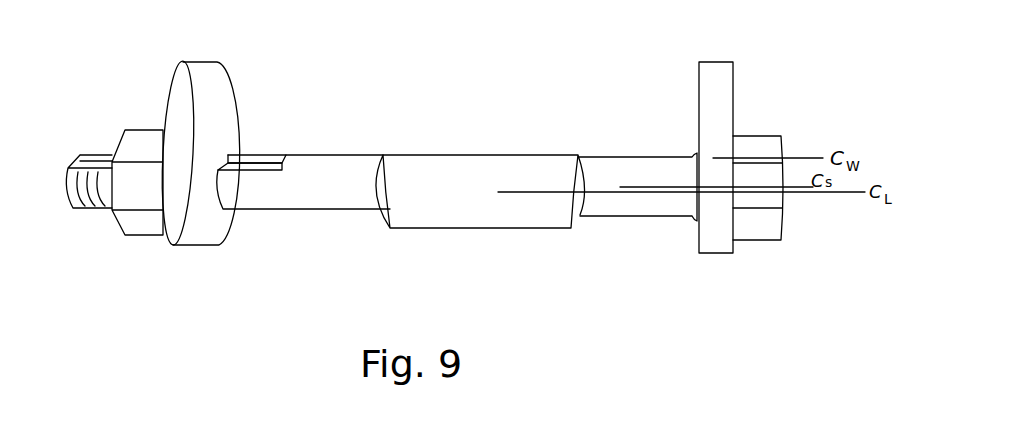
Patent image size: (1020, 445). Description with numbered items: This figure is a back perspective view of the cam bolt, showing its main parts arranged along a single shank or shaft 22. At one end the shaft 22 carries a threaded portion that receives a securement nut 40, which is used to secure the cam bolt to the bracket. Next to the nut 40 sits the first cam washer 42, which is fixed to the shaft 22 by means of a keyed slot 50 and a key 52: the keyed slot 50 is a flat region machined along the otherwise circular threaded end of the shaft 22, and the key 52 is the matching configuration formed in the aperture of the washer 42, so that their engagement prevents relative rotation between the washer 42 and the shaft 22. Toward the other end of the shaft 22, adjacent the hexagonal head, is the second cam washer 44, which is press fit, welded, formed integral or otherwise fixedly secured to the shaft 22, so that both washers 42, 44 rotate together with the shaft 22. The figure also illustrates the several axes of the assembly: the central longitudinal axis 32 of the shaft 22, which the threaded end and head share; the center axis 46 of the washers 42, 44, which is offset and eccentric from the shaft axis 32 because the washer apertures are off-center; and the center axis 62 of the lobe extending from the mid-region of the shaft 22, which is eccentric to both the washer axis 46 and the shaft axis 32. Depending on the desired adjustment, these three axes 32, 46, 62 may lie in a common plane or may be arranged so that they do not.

The shaft 22 is at (290, 197).
The central longitudinal axis 32 is at (638, 187).
The securement nut 40 is at (140, 197).
The first cam washer 42 is at (178, 112).
The second cam washer 44 is at (712, 90).
The center axis of the washers 46 is at (753, 157).
The keyed slot 50 is at (89, 165).
The key 52 is at (225, 167).
The center axis of the lobe 62 is at (522, 190).